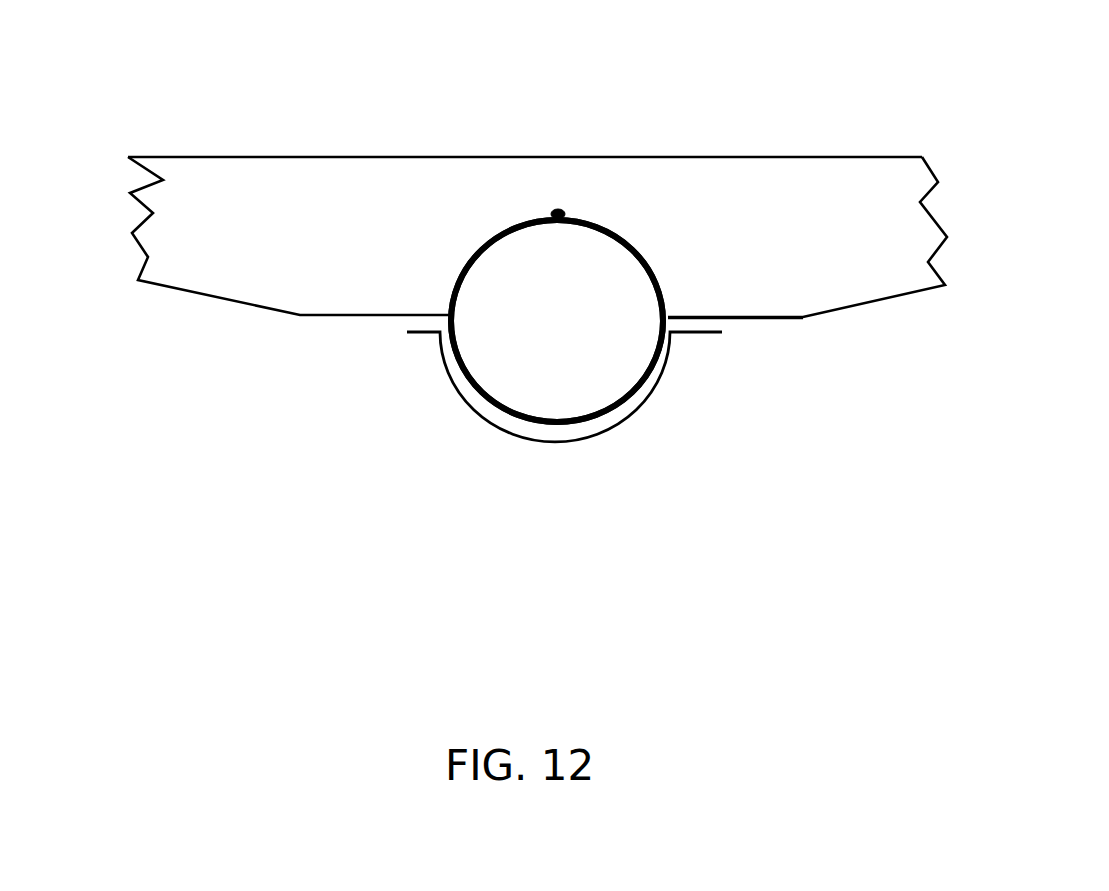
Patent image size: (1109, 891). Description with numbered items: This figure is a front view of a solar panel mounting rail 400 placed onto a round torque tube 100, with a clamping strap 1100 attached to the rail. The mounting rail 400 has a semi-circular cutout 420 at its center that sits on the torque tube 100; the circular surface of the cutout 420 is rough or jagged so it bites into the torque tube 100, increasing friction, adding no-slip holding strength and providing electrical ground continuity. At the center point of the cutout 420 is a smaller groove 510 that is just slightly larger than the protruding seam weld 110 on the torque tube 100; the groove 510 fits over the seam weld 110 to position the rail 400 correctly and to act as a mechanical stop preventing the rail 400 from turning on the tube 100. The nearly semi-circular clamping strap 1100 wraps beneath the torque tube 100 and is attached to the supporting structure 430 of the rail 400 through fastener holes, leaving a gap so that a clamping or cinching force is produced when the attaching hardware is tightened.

The torque tube 100 is at (450, 321).
The seam weld 110 is at (553, 213).
The solar panel mounting rail 400 is at (155, 140).
The semi-circular cutout 420 is at (622, 233).
The supporting structure 430 is at (762, 158).
The groove 510 is at (555, 208).
The clamping strap 1100 is at (438, 335).